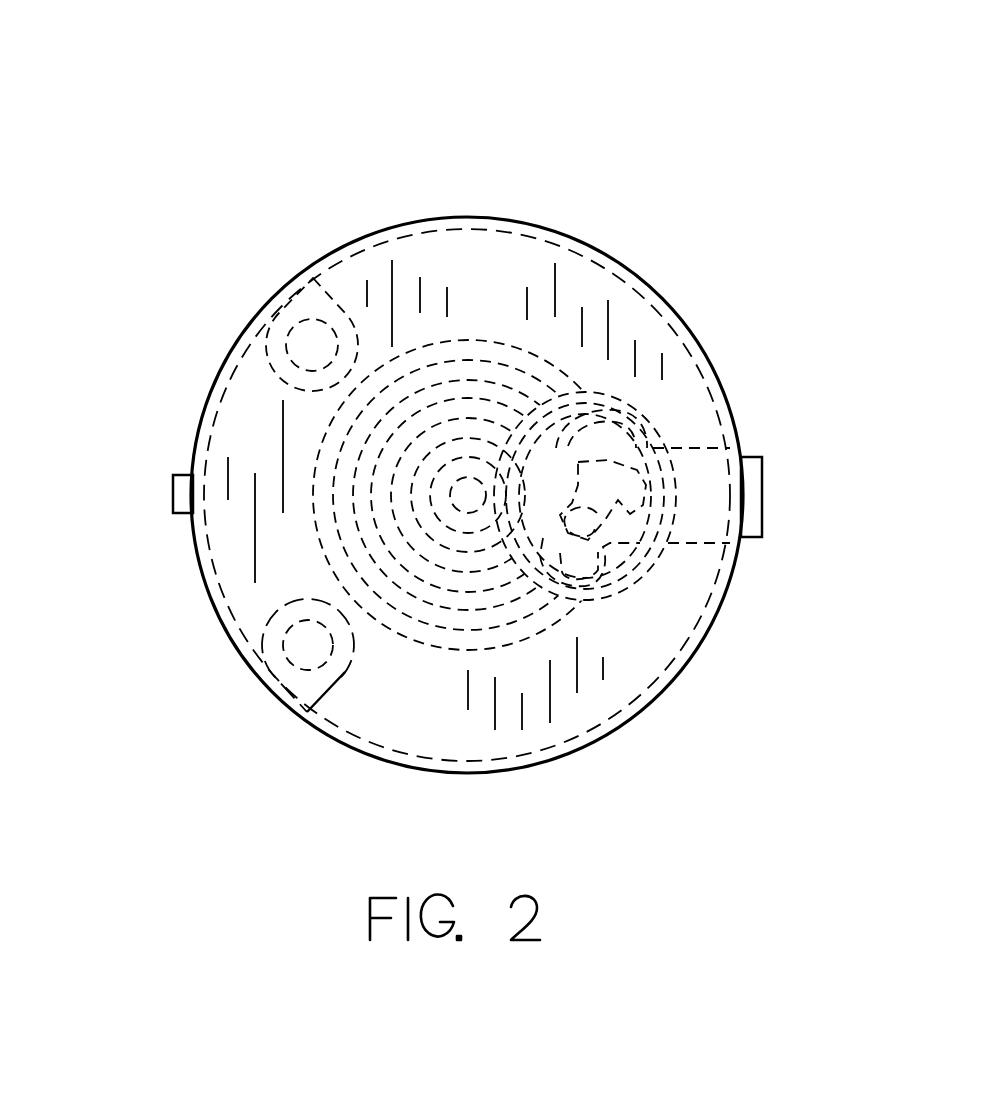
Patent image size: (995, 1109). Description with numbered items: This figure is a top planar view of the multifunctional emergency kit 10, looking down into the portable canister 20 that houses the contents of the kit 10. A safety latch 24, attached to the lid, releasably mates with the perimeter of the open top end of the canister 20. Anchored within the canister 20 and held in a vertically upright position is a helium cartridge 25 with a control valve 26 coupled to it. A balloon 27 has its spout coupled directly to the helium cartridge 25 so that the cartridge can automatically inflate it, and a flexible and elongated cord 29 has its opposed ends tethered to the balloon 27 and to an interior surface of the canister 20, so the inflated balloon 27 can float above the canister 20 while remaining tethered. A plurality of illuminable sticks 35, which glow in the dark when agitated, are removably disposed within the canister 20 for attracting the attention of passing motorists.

The multifunctional emergency kit 10 is at (655, 147).
The portable canister 20 is at (705, 348).
The safety latch 24 is at (187, 498).
The control valve 26 is at (752, 514).
The helium cartridge 25 is at (606, 585).
The balloon 27 is at (627, 560).
The flexible and elongated cord 29 is at (445, 367).
The illuminable sticks 35 is at (307, 350).